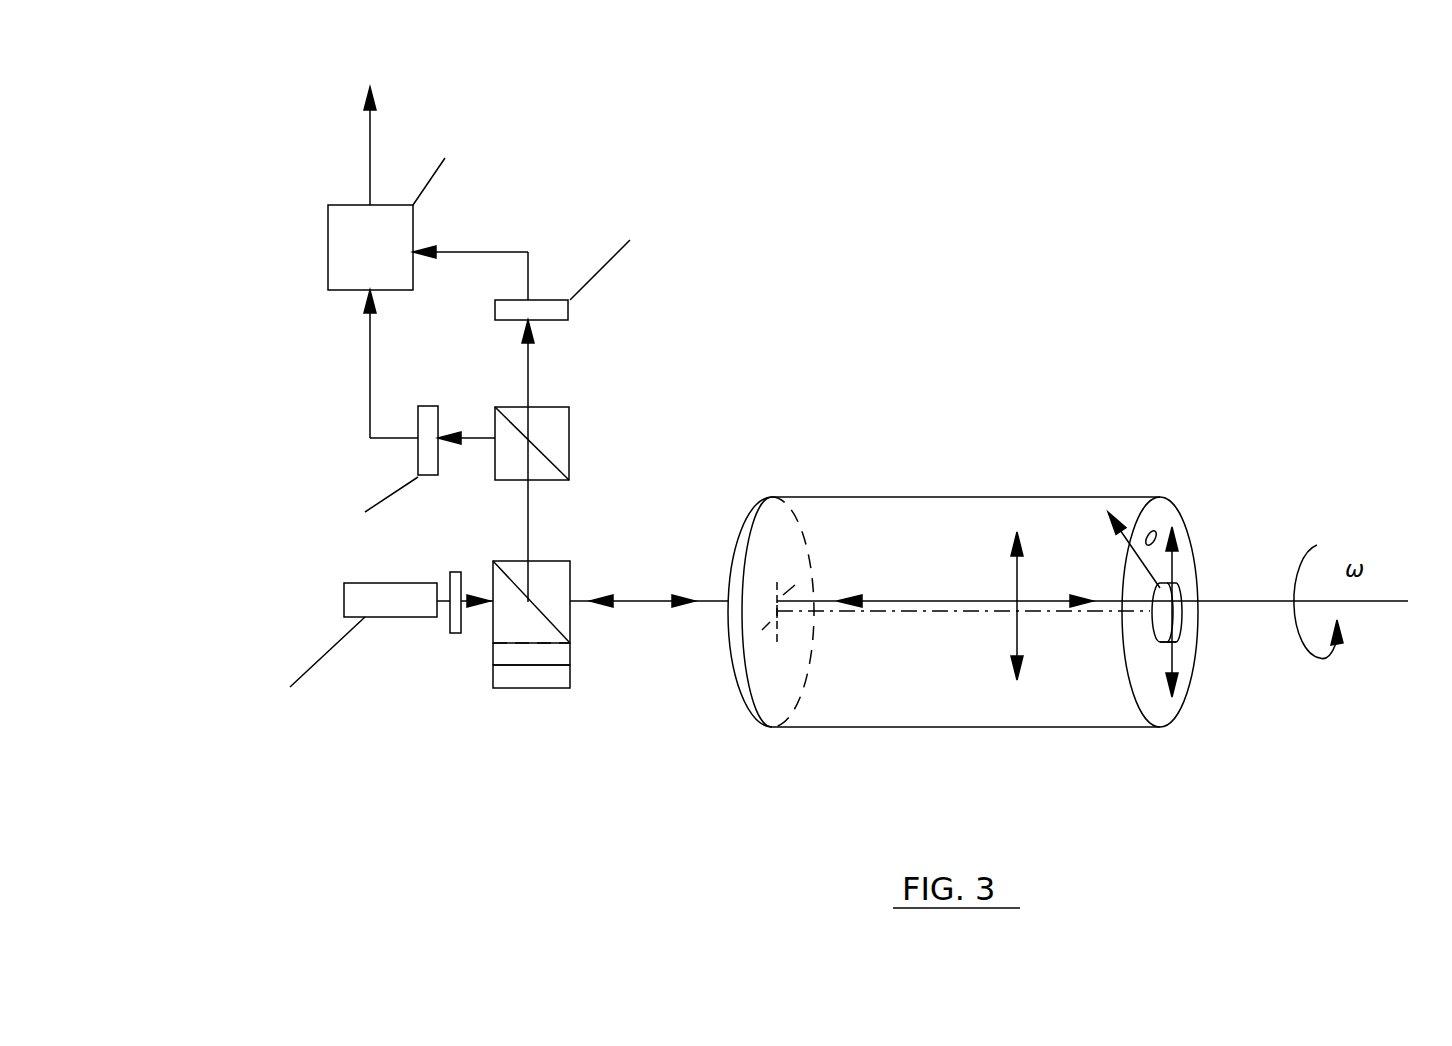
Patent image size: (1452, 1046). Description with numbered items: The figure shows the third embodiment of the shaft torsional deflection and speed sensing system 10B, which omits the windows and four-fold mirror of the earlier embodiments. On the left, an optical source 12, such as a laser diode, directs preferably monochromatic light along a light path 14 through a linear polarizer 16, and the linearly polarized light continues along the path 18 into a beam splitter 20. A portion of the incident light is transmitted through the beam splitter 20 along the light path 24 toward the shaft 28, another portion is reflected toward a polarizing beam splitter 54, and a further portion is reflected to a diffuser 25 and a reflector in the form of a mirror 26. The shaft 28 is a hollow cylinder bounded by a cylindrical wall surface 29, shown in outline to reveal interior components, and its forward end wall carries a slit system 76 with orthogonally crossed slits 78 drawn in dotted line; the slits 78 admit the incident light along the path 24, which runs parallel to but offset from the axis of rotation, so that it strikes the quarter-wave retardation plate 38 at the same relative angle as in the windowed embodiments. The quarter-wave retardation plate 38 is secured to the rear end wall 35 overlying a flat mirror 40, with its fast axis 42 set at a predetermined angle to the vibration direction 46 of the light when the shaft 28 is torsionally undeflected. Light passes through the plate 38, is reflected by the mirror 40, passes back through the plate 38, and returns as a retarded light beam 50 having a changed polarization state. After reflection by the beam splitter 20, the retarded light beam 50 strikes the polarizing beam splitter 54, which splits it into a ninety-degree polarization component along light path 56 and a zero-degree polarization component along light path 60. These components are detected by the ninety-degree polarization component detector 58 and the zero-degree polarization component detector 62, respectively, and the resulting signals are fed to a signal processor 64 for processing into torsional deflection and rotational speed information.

The shaft torsional deflection and speed sensing system 10B is at (834, 391).
The optical source 12 is at (344, 595).
The light path 14 is at (443, 603).
The linear polarizer 16 is at (457, 633).
The light beam 18 is at (477, 603).
The beam splitter 20 is at (570, 625).
The light path 24 is at (688, 582).
The diffuser 25 is at (570, 662).
The mirror 26 is at (538, 688).
The shaft 28 is at (972, 710).
The cylindrical wall surface 29 is at (905, 727).
The rear end wall 35 is at (1180, 657).
The quarter-wave retardation plate 38 is at (1151, 643).
The mirror 40 is at (1178, 595).
The fast axis 42 is at (1118, 515).
The vibration direction 46 is at (1015, 583).
The retarded light beam 50 is at (603, 582).
The polarizing beam splitter 54 is at (569, 440).
The light path of 90° polarization component beam 56 is at (482, 437).
The 90° polarization component detector 58 is at (430, 477).
The light path of 0° polarization component beam 60 is at (528, 379).
The 0° polarization component detector 62 is at (568, 310).
The signal processor 64 is at (503, 188).
The slit system 76 is at (772, 622).
The orthogonally crossed slits 78 is at (780, 583).